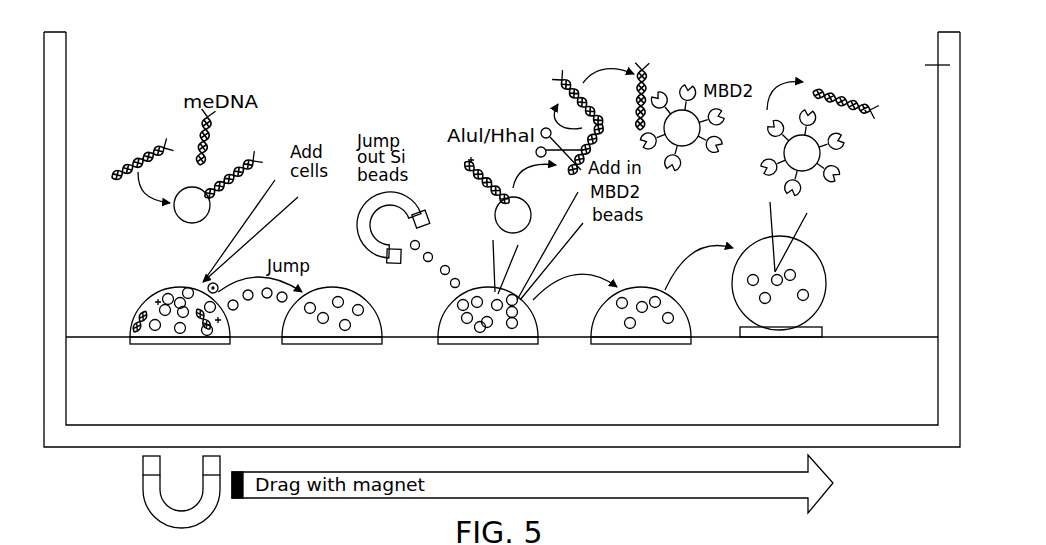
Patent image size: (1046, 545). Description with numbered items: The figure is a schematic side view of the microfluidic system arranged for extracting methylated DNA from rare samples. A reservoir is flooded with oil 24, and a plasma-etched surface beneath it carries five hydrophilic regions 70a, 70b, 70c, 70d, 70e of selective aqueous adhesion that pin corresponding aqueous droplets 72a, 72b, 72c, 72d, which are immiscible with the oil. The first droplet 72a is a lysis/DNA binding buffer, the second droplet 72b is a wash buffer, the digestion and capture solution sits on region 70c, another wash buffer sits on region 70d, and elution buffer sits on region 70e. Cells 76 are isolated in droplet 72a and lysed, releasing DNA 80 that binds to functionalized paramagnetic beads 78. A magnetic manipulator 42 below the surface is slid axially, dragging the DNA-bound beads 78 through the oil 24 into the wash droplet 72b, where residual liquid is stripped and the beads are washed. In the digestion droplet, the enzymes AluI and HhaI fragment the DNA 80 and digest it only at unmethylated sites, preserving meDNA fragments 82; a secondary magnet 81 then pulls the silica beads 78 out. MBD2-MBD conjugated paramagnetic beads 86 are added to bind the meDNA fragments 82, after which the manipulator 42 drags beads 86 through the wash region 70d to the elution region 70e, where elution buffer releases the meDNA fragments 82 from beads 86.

The oil 24 is at (122, 92).
The magnetic manipulator 42 is at (210, 513).
The region of selective aqueous adhesion 70a is at (151, 323).
The region of selective aqueous adhesion 70b is at (316, 320).
The region of selective aqueous adhesion 70c is at (653, 322).
The region of selective aqueous adhesion 70d is at (664, 331).
The region of selective aqueous adhesion 70e is at (822, 327).
The droplet 72a is at (147, 300).
The droplet 72b is at (337, 282).
The droplet 72c is at (487, 290).
The droplet 72d is at (632, 290).
The cells 76 is at (217, 283).
The functionalized paramagnetic beads 78 is at (176, 208).
The DNA 80 is at (137, 166).
The magnet 81 is at (417, 194).
The meDNA fragments 82 is at (573, 82).
The MBD2-MBD conjugated paramagnetic beads 86 is at (678, 110).